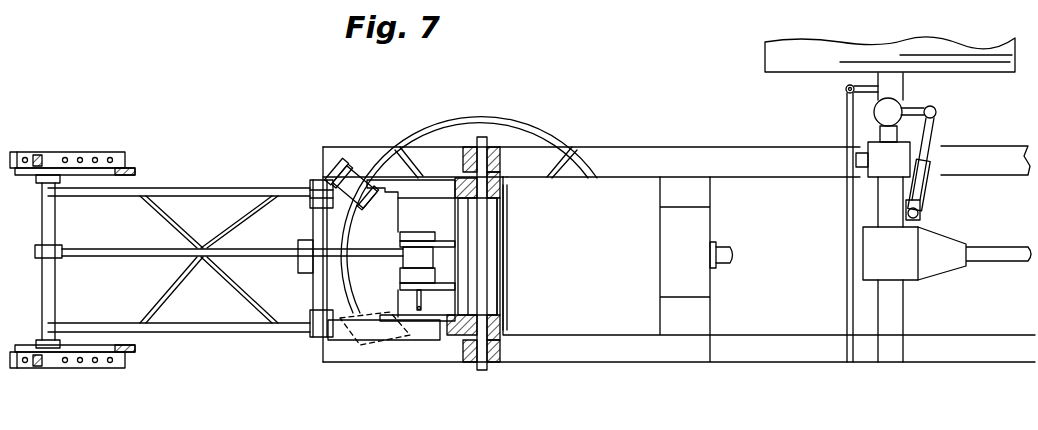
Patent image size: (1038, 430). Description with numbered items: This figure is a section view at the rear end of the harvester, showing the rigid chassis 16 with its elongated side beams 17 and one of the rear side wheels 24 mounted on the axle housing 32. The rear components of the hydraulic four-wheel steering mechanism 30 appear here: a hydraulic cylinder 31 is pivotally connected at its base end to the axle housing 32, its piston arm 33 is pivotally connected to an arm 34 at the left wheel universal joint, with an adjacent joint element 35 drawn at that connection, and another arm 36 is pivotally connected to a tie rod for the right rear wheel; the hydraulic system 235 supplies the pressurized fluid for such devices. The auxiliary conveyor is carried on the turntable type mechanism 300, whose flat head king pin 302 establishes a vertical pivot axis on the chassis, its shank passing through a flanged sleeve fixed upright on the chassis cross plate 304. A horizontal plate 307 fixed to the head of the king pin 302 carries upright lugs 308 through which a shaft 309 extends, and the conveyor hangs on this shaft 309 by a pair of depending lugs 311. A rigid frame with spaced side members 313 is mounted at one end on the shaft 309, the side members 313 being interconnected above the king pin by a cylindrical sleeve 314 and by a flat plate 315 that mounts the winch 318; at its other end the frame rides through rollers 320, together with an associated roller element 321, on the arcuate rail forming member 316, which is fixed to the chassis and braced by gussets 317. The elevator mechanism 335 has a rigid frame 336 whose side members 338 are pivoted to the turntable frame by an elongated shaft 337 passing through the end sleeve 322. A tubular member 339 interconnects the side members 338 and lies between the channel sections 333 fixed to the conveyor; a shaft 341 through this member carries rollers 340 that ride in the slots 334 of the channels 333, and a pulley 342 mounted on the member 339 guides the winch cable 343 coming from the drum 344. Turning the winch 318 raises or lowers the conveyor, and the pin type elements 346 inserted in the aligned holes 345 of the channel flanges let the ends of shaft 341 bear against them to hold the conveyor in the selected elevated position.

The chassis 16 is at (698, 147).
The side beams 17 is at (655, 147).
The rear side wheels 24 is at (765, 57).
The hydraulic four-wheel steering mechanism 30 is at (928, 182).
The hydraulic cylinder 31 is at (920, 212).
The axle housing 32 is at (878, 210).
The piston arm 33 is at (935, 140).
The arm 34 is at (935, 106).
The ball 35 is at (900, 106).
The arm 36 is at (846, 84).
The hydraulic system 235 is at (716, 242).
The turntable type mechanism 300 is at (508, 266).
The king pin 302 is at (508, 272).
The chassis cross plate 304 is at (500, 250).
The horizontal plate 307 is at (503, 226).
The upright lugs 308 is at (500, 180).
The shaft 309 is at (498, 300).
The depending lugs 311 is at (463, 160).
The side members 313 is at (413, 206).
The cylindrical sleeve 314 is at (500, 290).
The flat plate 315 is at (398, 222).
The arcuate rail forming member 316 is at (556, 135).
The gussets 317 is at (556, 182).
The winch 318 is at (418, 292).
The rollers 320 is at (372, 172).
The cylinder end 321 is at (343, 170).
The end sleeve 322 is at (313, 280).
The channel sections 333 is at (125, 160).
The slot 334 is at (110, 152).
The elevator mechanism 335 is at (225, 332).
The rigid frame 336 is at (178, 332).
The shaft 337 is at (318, 178).
The side members 338 is at (185, 206).
The tubular member 339 is at (55, 298).
The rollers 340 is at (36, 183).
The shaft 341 is at (55, 368).
The pulley 342 is at (62, 247).
The winch cable 343 is at (255, 249).
The drum 344 is at (440, 250).
The holes 345 is at (80, 157).
The pin type element 346 is at (38, 154).